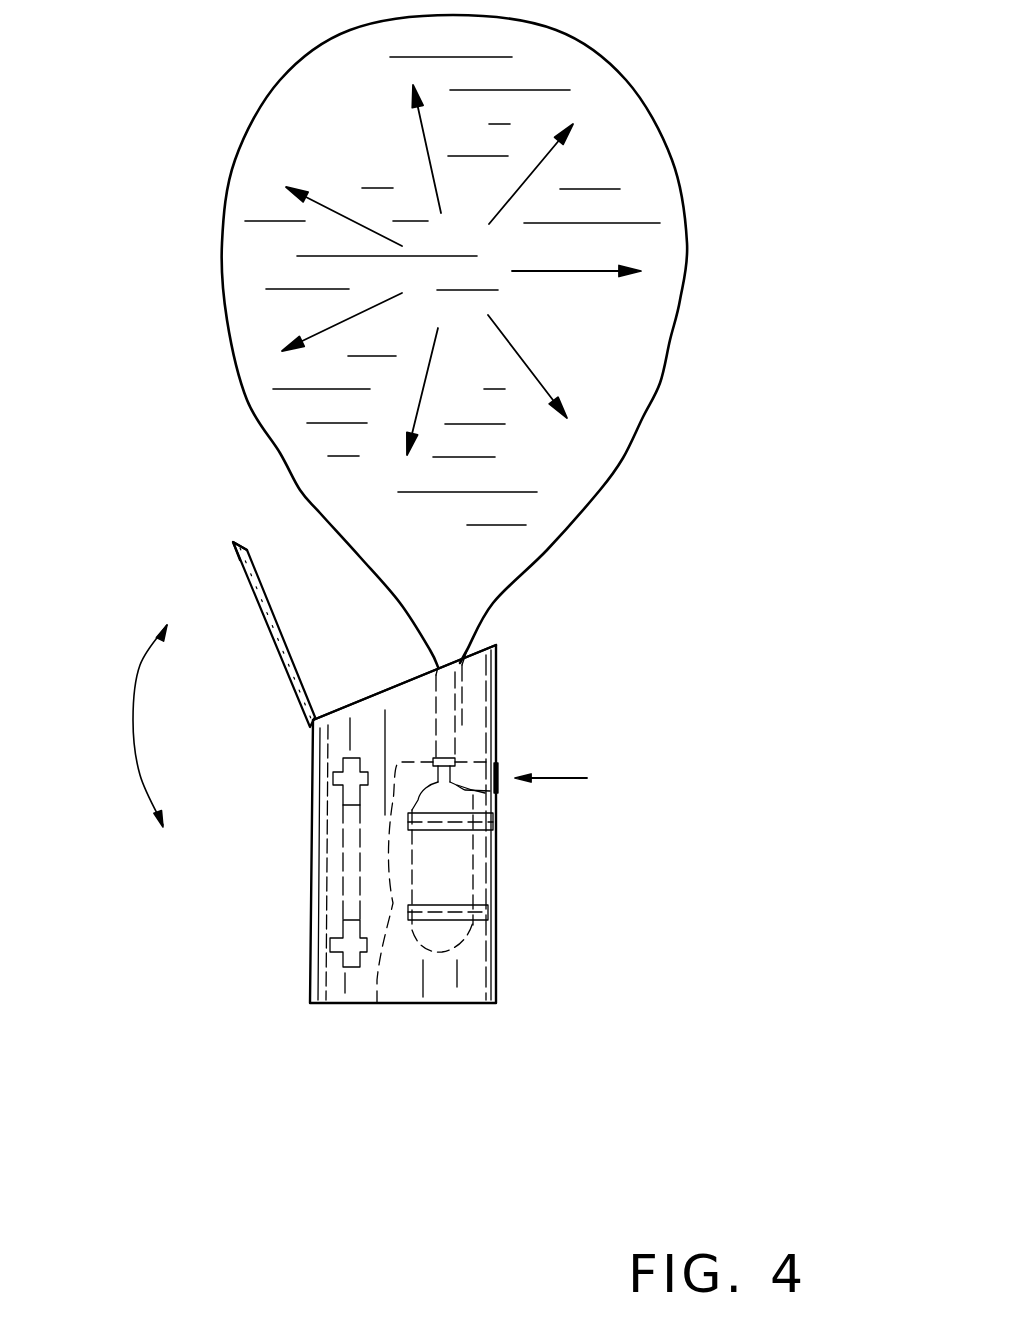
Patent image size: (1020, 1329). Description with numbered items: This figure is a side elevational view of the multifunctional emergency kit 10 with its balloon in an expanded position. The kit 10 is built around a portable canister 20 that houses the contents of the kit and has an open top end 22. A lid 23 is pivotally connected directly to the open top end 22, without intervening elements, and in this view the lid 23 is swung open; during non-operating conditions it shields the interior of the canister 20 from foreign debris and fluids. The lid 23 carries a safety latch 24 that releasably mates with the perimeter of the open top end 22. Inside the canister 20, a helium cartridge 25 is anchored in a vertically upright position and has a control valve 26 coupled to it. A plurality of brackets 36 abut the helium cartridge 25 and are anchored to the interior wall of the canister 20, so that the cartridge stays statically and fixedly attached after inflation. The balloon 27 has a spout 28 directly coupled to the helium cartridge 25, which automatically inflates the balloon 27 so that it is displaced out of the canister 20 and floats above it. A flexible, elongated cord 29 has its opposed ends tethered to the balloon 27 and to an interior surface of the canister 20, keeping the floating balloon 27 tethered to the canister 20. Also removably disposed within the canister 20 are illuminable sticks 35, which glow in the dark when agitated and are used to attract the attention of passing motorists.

The multifunctional emergency kit 10 is at (137, 336).
The portable canister 20 is at (522, 670).
The open top end 22 is at (340, 685).
The lid 23 is at (273, 633).
The safety latch 24 is at (238, 542).
The helium cartridge 25 is at (455, 878).
The control valve 26 is at (497, 782).
The balloon 27 is at (491, 341).
The spout 28 is at (450, 760).
The cord 29 is at (377, 978).
The illuminable sticks 35 is at (345, 888).
The brackets 36 is at (485, 823).